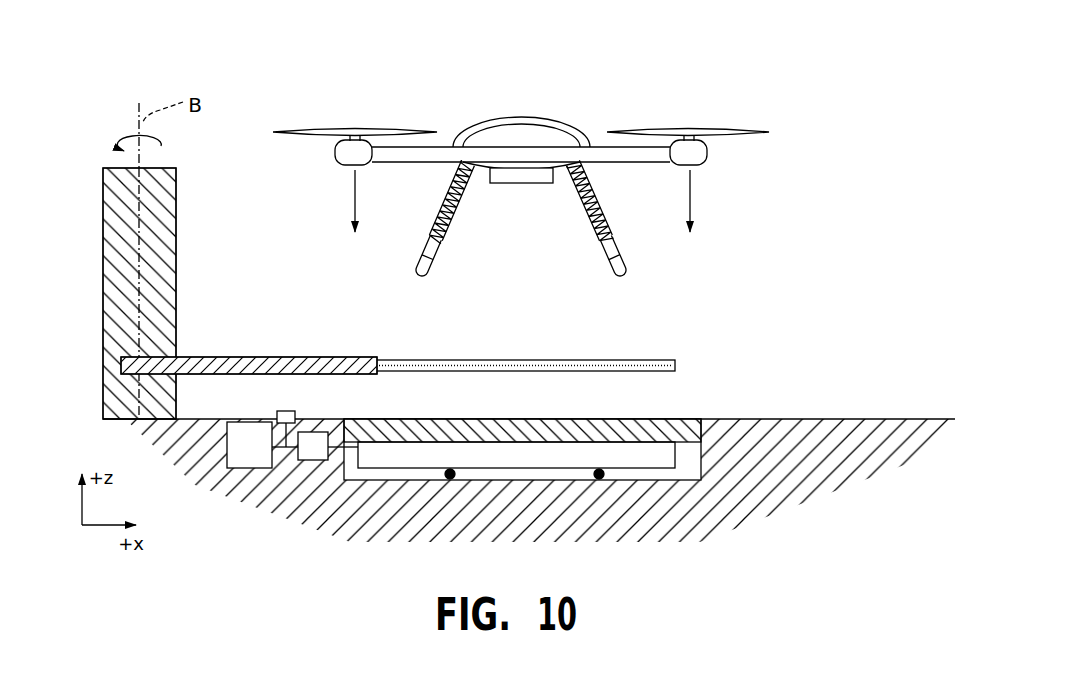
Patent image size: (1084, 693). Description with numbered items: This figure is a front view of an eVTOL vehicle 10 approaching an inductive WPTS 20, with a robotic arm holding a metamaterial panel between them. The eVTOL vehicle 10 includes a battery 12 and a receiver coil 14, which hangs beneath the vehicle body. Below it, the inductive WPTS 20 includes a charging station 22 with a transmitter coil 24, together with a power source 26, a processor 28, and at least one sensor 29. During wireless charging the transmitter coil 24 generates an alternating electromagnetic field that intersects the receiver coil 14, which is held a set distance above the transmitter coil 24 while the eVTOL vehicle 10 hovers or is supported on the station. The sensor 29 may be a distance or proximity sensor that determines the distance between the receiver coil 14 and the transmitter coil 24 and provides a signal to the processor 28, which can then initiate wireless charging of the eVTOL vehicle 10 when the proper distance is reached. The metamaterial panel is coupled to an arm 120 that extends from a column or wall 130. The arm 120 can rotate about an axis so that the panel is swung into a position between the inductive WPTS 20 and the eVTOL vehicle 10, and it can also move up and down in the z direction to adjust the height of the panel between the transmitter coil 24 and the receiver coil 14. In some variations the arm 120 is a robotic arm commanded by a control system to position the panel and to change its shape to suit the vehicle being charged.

The eVTOL vehicle 10 is at (747, 98).
The battery 12 is at (540, 160).
The receiver coil 14 is at (508, 184).
The inductive WPTS 20 is at (820, 387).
The charging station 22 is at (877, 523).
The transmitter coil 24 is at (665, 472).
The power source 26 is at (240, 470).
The processor 28 is at (305, 462).
The sensor 29 is at (287, 410).
The arm 120 is at (265, 355).
The column or wall 130 is at (101, 196).